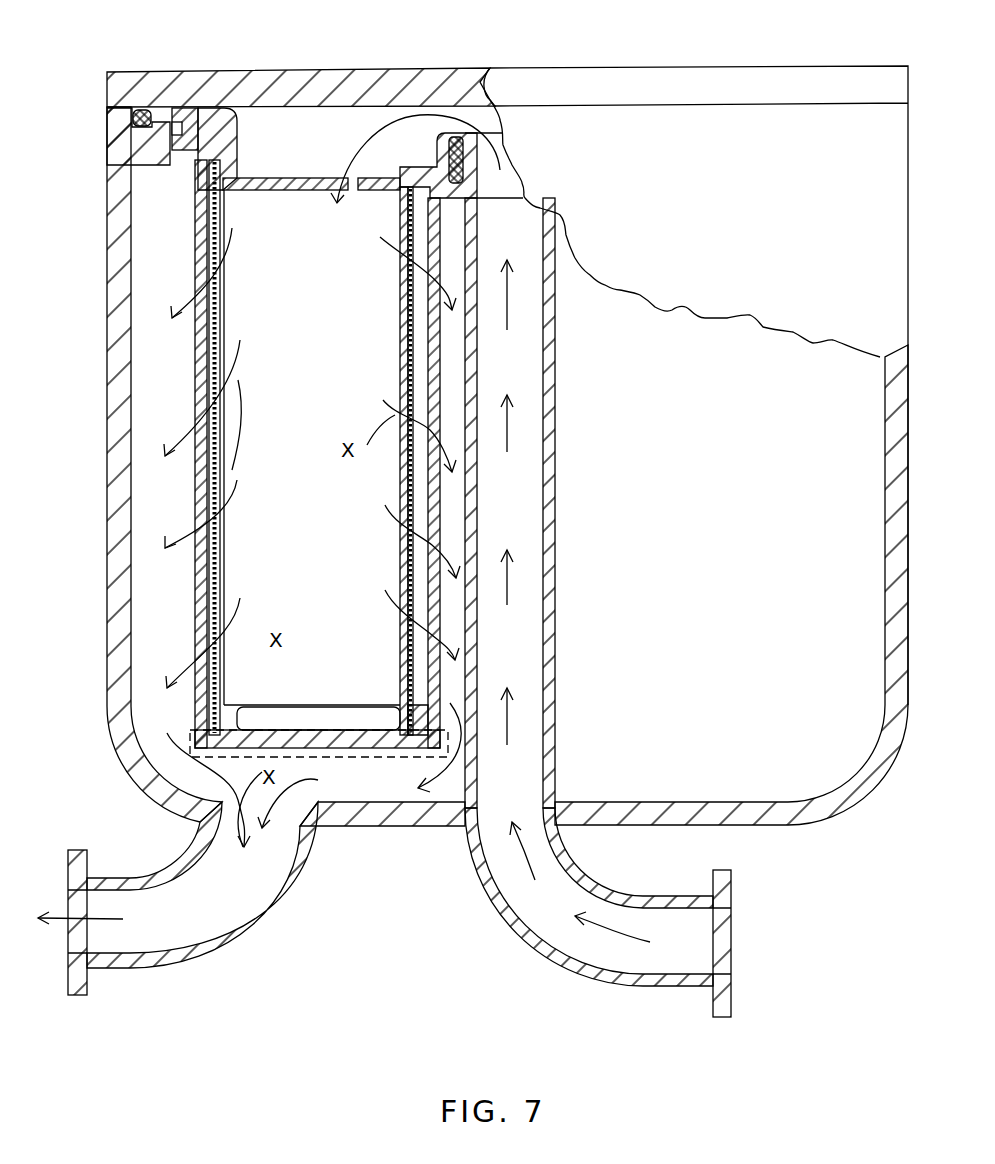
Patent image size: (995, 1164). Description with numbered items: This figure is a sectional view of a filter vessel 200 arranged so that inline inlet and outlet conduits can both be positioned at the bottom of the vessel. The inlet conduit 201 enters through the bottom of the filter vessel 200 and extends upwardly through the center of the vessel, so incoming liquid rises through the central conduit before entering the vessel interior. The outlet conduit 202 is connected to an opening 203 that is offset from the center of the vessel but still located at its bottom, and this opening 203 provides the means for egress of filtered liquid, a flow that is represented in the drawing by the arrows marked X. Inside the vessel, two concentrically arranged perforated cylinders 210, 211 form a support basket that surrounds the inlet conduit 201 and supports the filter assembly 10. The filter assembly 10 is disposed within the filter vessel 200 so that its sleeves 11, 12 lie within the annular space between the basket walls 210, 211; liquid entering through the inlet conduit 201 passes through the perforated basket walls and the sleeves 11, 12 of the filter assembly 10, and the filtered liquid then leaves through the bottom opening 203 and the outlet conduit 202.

The filter assembly 10 is at (283, 143).
The sleeve 11 is at (222, 318).
The sleeve 12 is at (407, 376).
The filter vessel 200 is at (770, 828).
The inlet conduit 201 is at (541, 940).
The outlet conduit 202 is at (220, 933).
The opening 203 is at (320, 812).
The perforated cylinder 210 is at (445, 488).
The perforated cylinder 211 is at (195, 590).